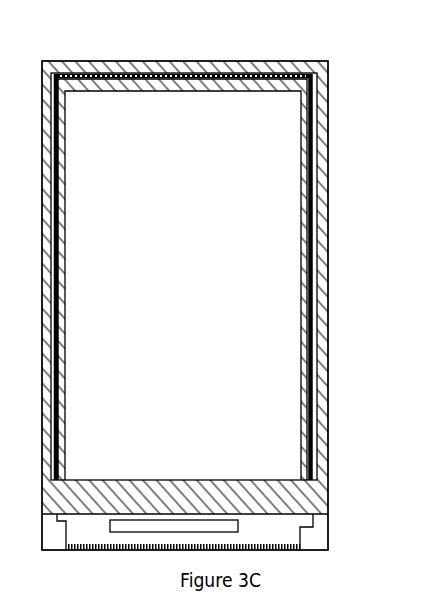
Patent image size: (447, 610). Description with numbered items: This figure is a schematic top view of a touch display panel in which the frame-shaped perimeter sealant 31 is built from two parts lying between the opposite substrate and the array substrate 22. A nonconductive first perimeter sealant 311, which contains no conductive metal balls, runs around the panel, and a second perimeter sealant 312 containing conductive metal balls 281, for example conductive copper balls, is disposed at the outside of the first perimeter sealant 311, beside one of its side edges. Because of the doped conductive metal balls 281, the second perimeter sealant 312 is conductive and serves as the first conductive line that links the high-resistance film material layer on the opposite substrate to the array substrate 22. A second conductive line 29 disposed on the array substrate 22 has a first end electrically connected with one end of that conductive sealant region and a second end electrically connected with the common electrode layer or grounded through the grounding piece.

The array substrate 22 is at (326, 280).
The second conductive line 29 is at (329, 477).
The perimeter sealant 31 is at (213, 247).
The first perimeter sealant 311 is at (303, 77).
The second perimeter sealant 312 is at (154, 76).
The conductive metal balls 281 is at (218, 76).